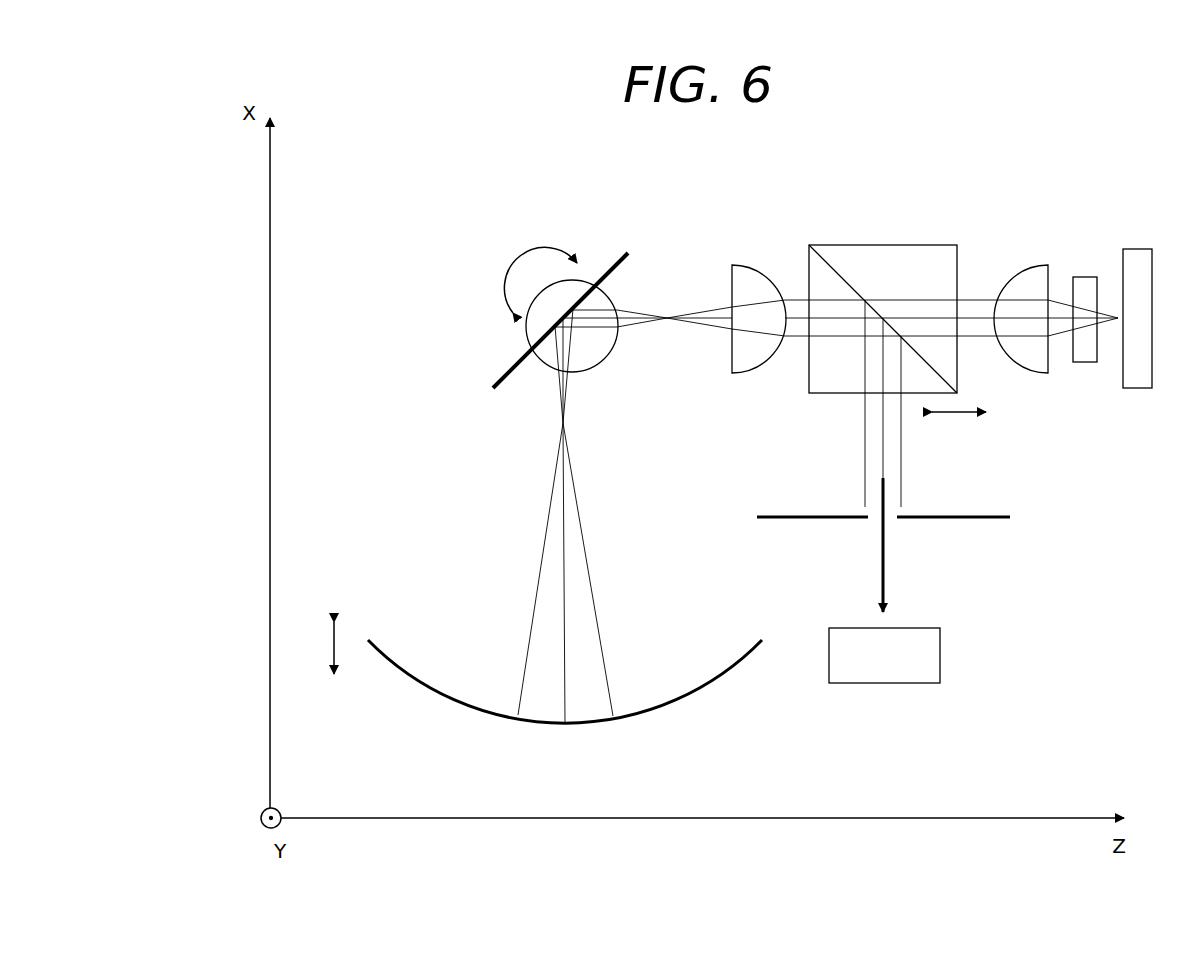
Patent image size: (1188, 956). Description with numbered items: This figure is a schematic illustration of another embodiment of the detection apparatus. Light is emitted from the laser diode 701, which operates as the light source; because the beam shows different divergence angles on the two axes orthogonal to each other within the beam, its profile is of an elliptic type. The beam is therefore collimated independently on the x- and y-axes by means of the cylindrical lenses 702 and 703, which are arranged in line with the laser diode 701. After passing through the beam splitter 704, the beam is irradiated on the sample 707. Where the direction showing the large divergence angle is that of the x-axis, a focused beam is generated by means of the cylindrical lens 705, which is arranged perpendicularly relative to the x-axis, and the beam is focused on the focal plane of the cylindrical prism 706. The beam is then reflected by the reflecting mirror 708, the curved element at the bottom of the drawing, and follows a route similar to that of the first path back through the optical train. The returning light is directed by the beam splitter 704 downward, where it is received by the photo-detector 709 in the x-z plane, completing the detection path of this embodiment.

The laser diode 701 is at (1140, 249).
The cylindrical lens 702 is at (1087, 277).
The cylindrical lens 703 is at (1025, 265).
The beam splitter 704 is at (908, 243).
The cylindrical lens 705 is at (750, 262).
The cylindrical prism 706 is at (600, 363).
The sample 707 is at (628, 250).
The reflecting mirror 708 is at (575, 725).
The photo-detector 709 is at (940, 652).